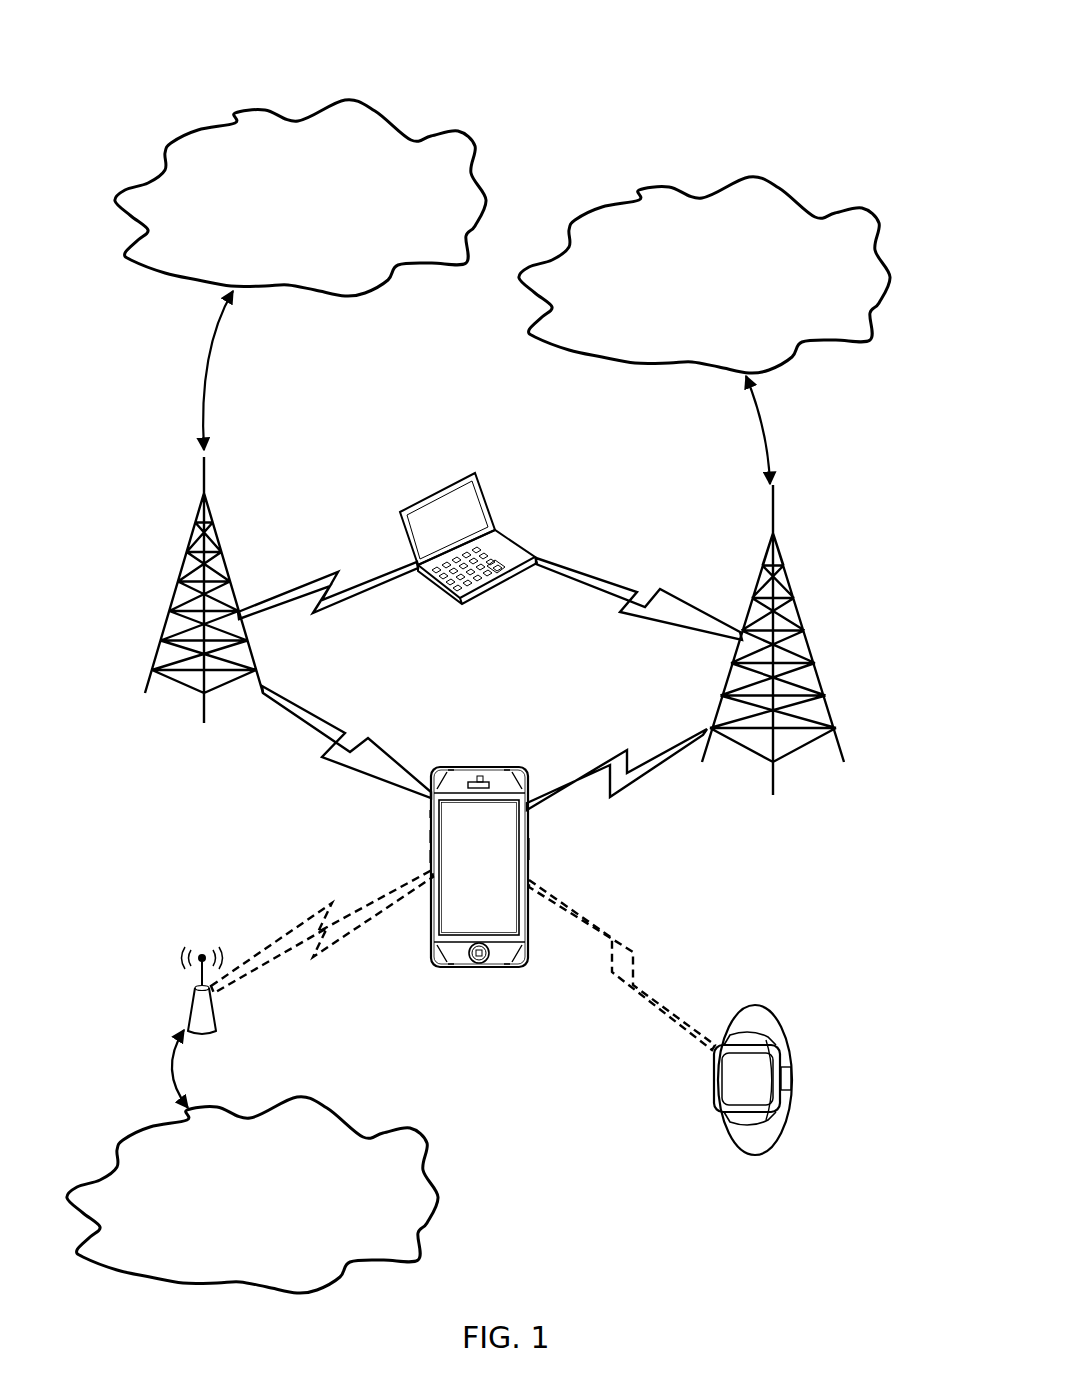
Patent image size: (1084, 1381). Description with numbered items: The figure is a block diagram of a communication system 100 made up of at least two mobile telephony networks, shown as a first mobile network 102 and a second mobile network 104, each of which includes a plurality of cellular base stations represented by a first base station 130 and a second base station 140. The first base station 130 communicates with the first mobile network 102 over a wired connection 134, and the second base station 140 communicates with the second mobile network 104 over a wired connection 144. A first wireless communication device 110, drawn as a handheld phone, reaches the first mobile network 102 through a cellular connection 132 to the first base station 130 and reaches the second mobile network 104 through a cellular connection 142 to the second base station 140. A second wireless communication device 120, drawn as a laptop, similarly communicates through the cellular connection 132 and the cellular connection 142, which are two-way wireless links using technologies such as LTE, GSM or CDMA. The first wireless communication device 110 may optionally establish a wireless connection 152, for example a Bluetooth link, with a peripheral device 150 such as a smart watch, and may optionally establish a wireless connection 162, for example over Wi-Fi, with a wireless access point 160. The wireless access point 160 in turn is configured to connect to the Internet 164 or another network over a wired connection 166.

The communication system 100 is at (214, 69).
The first mobile network 102 is at (362, 297).
The second mobile network 104 is at (640, 183).
The first wireless communication device 110 is at (526, 847).
The second wireless communication device 120 is at (411, 503).
The first base station 130 is at (181, 590).
The cellular connection 132 is at (336, 577).
The wired connection 134 is at (200, 362).
The second base station 140 is at (760, 552).
The cellular connection 142 is at (586, 566).
The wired connection 144 is at (757, 432).
The peripheral device 150 is at (770, 1000).
The wireless connection 152 is at (610, 935).
The wireless access point 160 is at (191, 1002).
The wireless connection 162 is at (314, 900).
The Internet 164 is at (423, 1136).
The wired connection 166 is at (178, 1080).